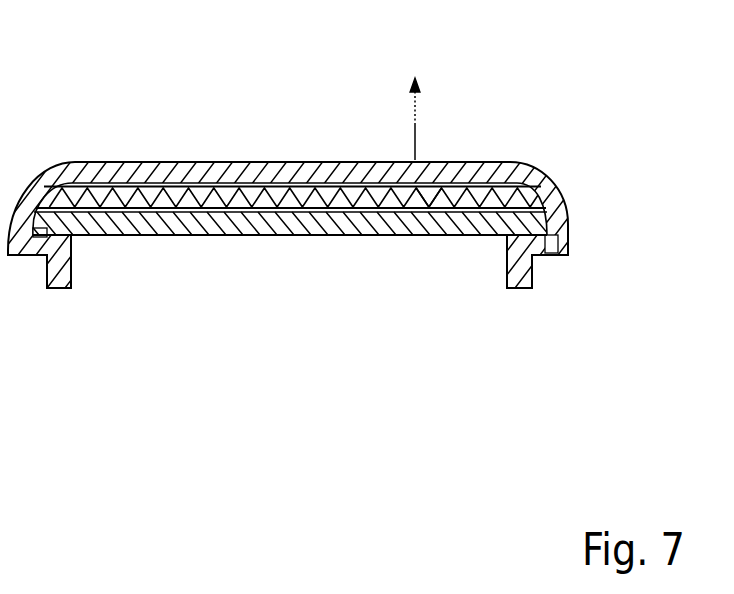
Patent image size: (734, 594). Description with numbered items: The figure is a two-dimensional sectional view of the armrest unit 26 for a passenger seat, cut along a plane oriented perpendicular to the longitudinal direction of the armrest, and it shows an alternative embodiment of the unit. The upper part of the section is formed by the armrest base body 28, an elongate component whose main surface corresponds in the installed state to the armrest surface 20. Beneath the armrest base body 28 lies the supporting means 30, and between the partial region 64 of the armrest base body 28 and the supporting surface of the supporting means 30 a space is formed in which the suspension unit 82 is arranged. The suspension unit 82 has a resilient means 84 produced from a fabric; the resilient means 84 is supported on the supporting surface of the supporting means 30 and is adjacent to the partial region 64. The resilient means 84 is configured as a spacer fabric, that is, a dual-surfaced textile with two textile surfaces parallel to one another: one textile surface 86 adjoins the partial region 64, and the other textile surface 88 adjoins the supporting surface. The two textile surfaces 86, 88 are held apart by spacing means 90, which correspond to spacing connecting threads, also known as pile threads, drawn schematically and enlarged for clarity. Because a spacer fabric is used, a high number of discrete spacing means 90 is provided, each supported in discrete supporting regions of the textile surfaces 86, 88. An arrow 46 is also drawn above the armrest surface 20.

The armrest surface 20 is at (312, 162).
The armrest unit 26 is at (536, 156).
The armrest base body 28 is at (97, 162).
The supporting means 30 is at (364, 231).
The viewing direction 46 is at (415, 125).
The partial region 64 is at (153, 163).
The suspension unit 82 is at (182, 214).
The resilient means 84 is at (260, 198).
The textile surface 86 is at (238, 183).
The textile surface 88 is at (123, 209).
The spacing means 90 is at (432, 192).